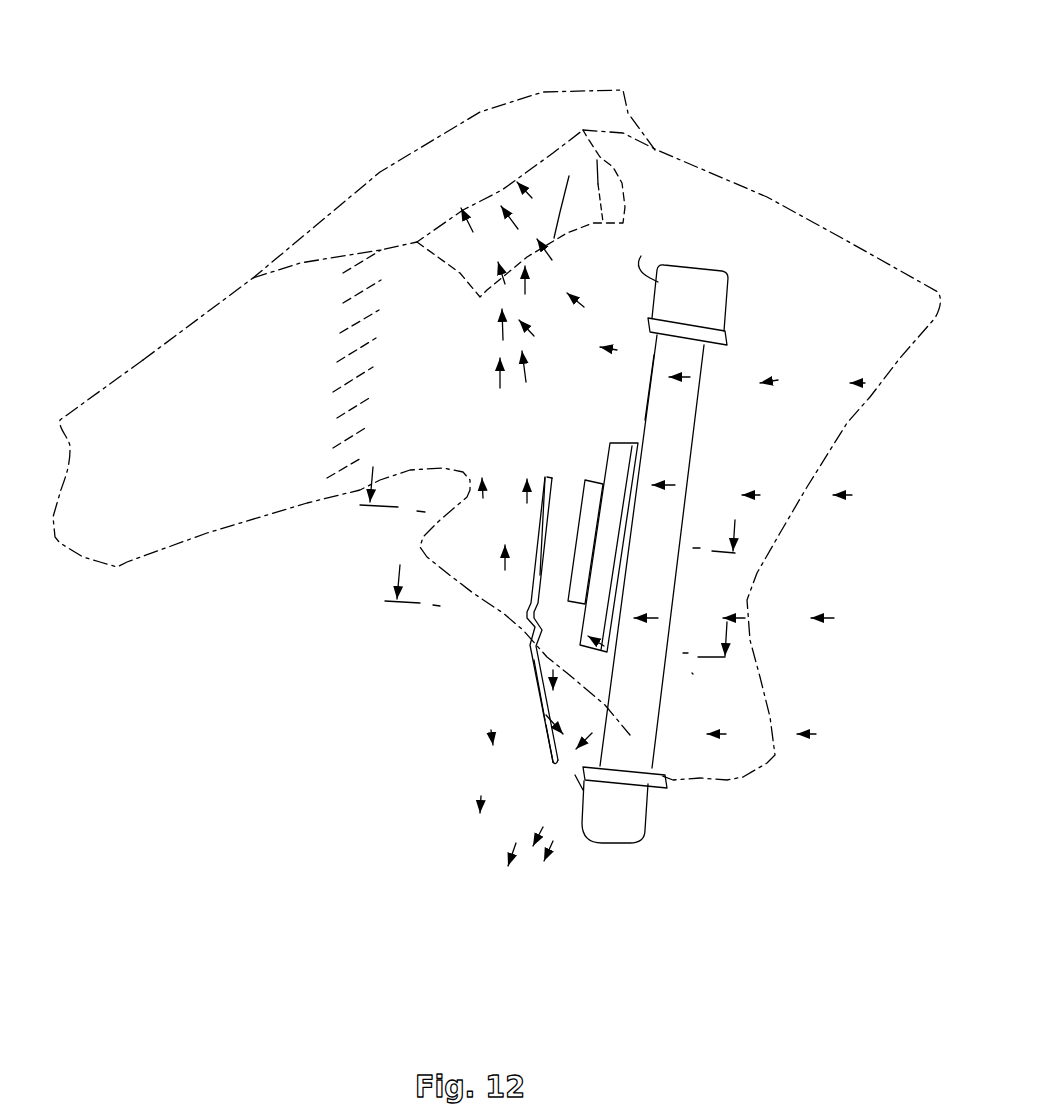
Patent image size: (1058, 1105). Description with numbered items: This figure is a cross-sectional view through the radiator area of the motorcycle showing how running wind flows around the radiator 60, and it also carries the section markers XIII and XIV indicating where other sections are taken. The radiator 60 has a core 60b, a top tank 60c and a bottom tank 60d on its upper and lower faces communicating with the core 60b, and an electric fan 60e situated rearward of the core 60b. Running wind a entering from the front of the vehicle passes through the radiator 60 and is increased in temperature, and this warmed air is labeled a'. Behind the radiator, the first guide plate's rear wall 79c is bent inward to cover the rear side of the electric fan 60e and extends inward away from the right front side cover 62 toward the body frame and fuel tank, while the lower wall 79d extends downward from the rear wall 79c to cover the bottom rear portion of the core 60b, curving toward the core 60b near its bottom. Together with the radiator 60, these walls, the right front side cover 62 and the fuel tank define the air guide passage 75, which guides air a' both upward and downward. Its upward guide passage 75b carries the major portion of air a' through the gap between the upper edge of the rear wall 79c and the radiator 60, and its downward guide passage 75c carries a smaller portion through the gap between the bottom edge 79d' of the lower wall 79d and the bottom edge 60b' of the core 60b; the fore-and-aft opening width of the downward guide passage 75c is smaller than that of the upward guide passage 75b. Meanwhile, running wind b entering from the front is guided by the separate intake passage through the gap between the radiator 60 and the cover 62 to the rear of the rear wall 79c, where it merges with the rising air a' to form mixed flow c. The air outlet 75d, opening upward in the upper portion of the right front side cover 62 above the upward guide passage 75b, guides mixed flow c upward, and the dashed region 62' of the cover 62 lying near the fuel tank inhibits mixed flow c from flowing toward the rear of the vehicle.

The radiator 60 is at (735, 305).
The core 60b is at (622, 387).
The bottom edge of core 60b' is at (664, 794).
The top tank 60c is at (641, 256).
The bottom tank 60d is at (660, 830).
The electric fan 60e is at (586, 485).
The right front side cover 62 is at (496, 435).
The region of right front side cover 62' is at (298, 364).
The air guide passage 75 is at (535, 610).
The upward guide passage 75b is at (562, 480).
The downward guide passage 75c is at (573, 780).
The air outlet 75d is at (552, 146).
The rear wall 79c is at (545, 477).
The lower wall 79d is at (506, 719).
The bottom edge of lower wall 79d' is at (500, 800).
The running wind a is at (692, 538).
The air a' is at (595, 692).
The running wind b is at (527, 280).
The mixed flow c is at (532, 196).
The section line XIII is at (548, 607).
The section line XIV is at (547, 498).